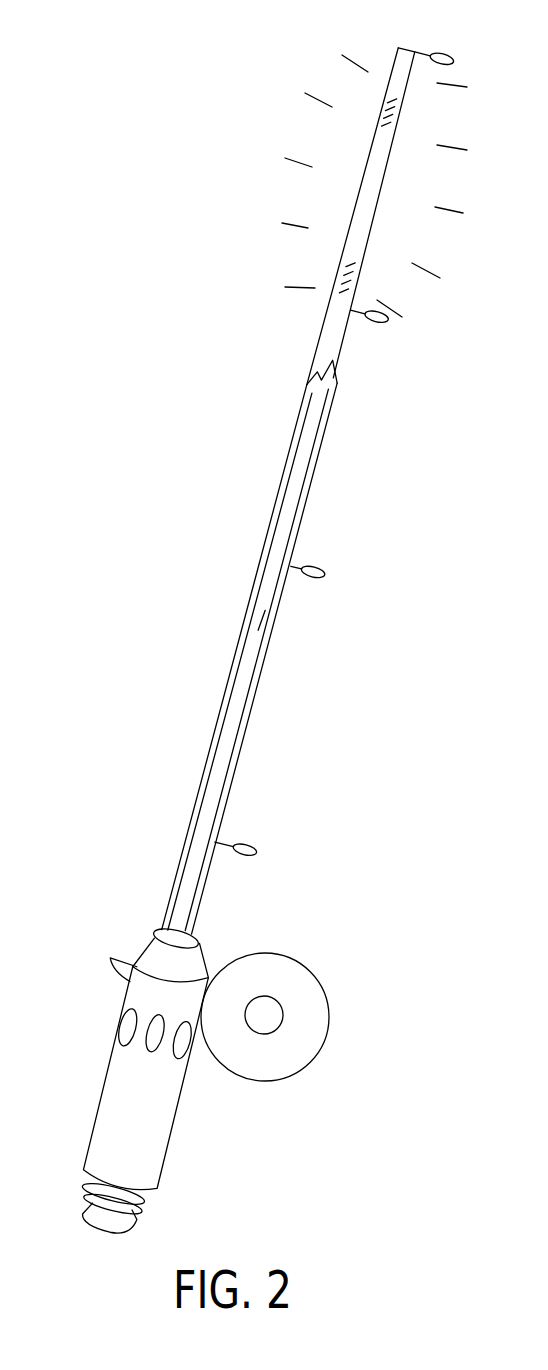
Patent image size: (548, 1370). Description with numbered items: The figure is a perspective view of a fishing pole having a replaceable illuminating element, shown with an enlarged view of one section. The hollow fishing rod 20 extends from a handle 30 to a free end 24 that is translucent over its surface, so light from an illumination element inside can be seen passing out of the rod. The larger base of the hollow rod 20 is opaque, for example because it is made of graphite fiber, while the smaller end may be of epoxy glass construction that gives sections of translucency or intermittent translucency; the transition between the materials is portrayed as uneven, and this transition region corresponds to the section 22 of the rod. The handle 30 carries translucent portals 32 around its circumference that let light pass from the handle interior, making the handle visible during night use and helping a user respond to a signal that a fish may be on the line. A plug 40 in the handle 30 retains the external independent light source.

The hollow fishing rod 20 is at (250, 602).
The lower rod section 22 is at (223, 775).
The free end 24 is at (378, 152).
The handle 30 is at (100, 1092).
The translucent portals 32 is at (130, 1028).
The plug 40 is at (86, 1194).